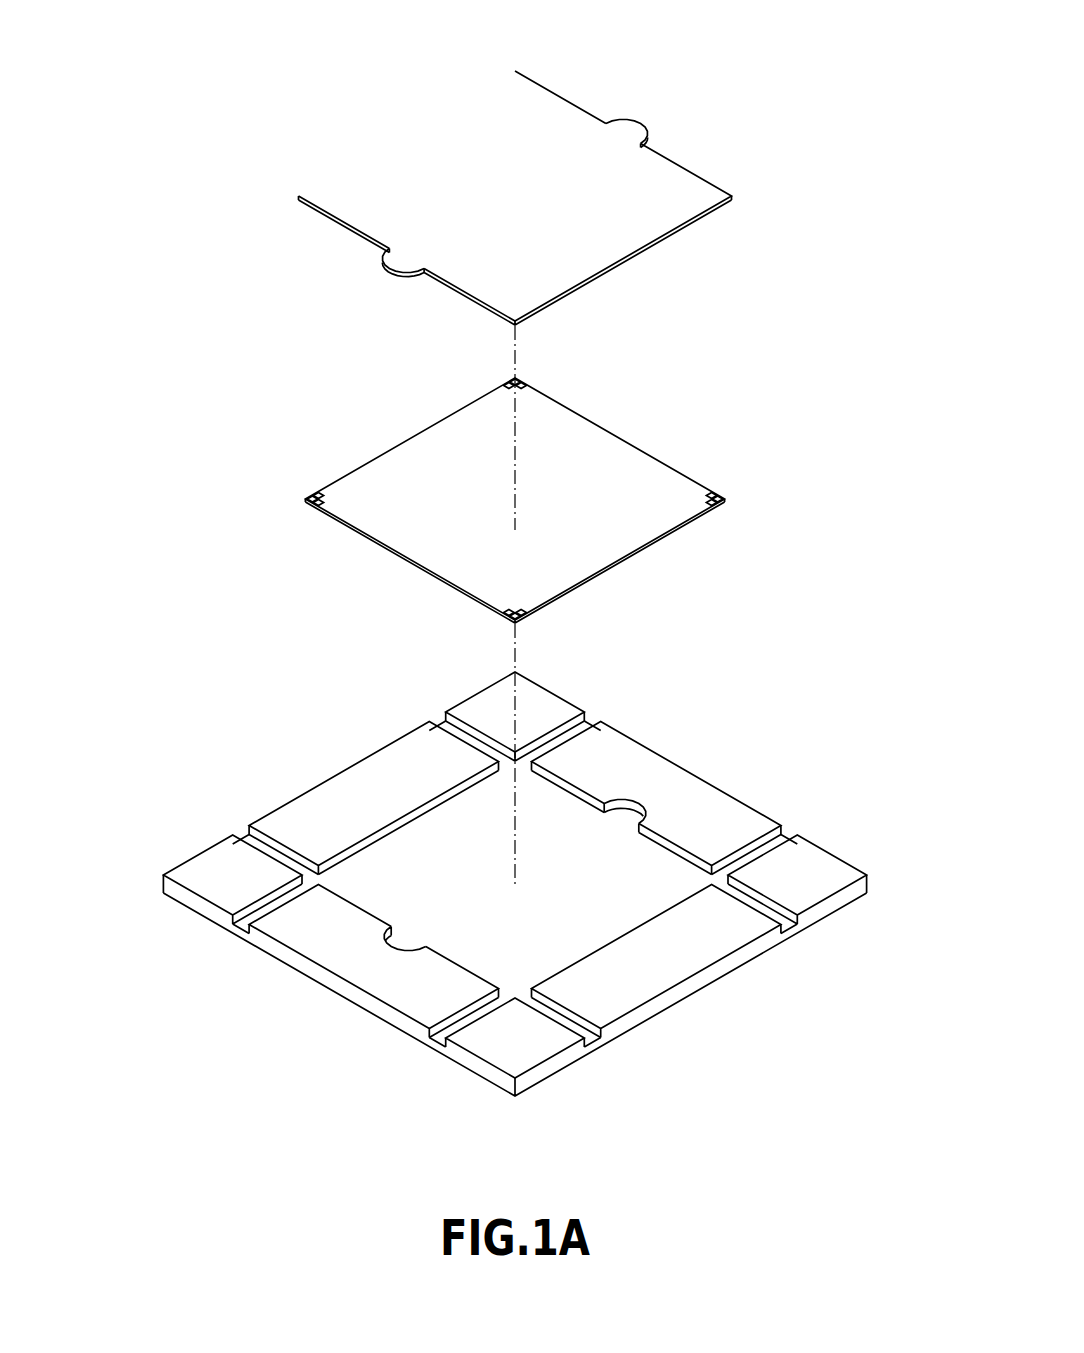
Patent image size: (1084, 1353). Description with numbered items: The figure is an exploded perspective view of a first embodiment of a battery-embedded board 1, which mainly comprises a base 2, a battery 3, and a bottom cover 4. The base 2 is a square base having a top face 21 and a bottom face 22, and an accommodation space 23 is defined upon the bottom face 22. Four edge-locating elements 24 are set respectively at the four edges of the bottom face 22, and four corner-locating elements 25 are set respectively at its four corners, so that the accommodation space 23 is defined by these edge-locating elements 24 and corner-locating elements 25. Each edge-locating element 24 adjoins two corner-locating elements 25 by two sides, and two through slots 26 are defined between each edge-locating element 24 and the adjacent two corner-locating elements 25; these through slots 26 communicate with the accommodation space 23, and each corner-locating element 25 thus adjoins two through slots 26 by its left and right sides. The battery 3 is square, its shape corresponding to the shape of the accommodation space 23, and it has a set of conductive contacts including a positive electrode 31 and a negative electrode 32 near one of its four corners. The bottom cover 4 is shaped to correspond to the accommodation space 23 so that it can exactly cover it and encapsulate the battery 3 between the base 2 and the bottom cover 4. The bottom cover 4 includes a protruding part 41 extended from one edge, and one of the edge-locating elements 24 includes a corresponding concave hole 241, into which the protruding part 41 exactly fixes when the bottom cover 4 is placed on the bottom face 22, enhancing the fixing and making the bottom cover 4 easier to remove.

The battery-embedded board 1 is at (801, 392).
The base 2 is at (504, 905).
The top face 21 is at (190, 912).
The bottom face 22 is at (518, 896).
The accommodation space 23 is at (568, 918).
The edge-locating element 24 is at (530, 884).
The concave hole 241 is at (628, 817).
The corner-locating element 25 is at (540, 713).
The through slot 26 is at (473, 738).
The battery 3 is at (478, 500).
The positive electrode 31 is at (318, 490).
The negative electrode 32 is at (313, 505).
The bottom cover 4 is at (515, 188).
The protruding part 41 is at (630, 132).